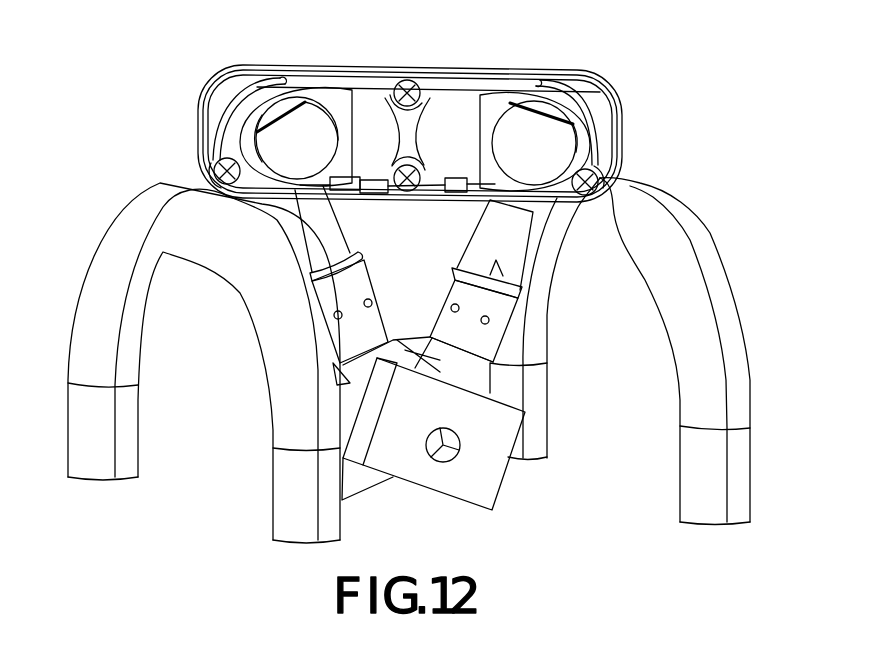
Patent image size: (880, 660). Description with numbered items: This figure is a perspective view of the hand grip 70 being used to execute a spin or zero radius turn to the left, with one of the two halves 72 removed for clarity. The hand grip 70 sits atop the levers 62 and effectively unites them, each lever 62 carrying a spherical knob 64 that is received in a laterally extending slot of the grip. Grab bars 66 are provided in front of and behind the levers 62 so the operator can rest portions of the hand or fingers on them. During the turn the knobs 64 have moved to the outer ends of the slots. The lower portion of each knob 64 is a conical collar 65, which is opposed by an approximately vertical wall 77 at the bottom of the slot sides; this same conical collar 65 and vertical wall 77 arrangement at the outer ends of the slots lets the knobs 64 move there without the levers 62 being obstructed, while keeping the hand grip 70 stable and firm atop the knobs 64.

The levers 62 is at (477, 238).
The knob 64 is at (262, 141).
The conical collar 65 is at (292, 198).
The grab bars 66 is at (119, 214).
The hand grip 70 is at (485, 61).
The halves 72 is at (523, 70).
The vertical wall 77 is at (264, 184).